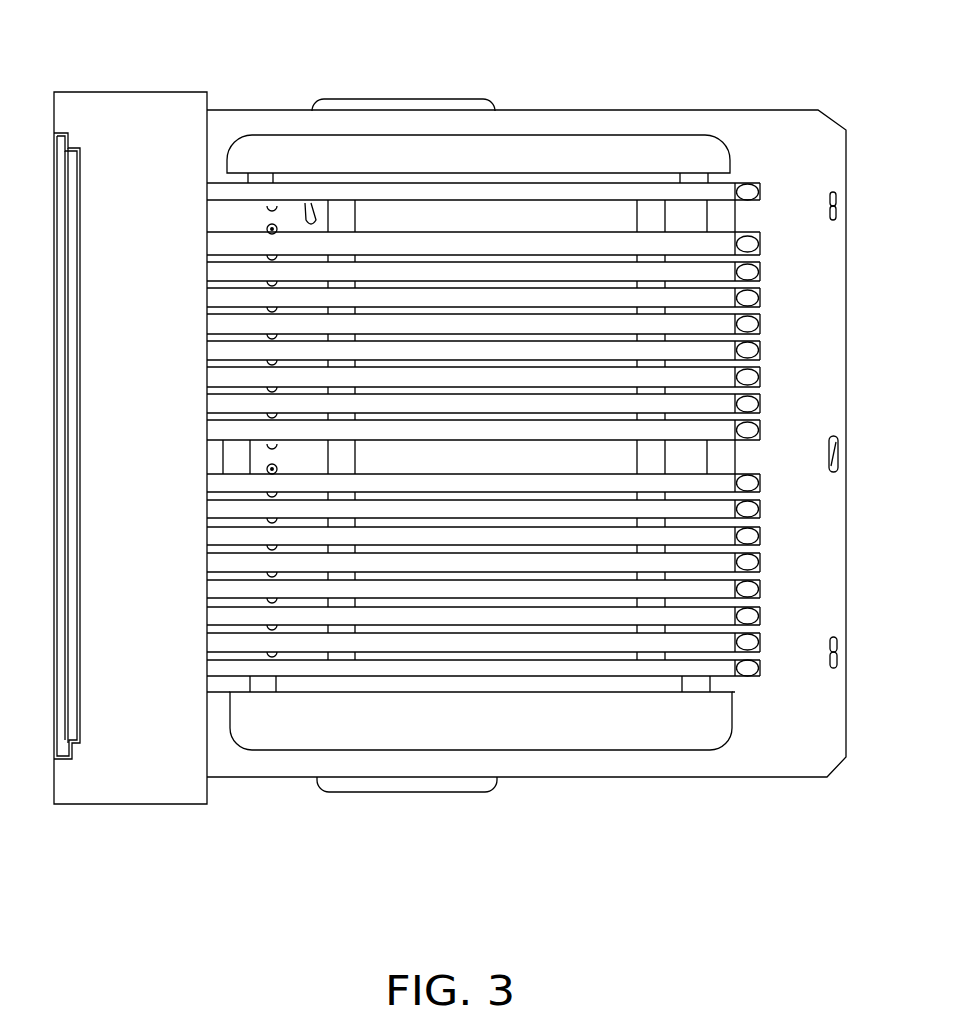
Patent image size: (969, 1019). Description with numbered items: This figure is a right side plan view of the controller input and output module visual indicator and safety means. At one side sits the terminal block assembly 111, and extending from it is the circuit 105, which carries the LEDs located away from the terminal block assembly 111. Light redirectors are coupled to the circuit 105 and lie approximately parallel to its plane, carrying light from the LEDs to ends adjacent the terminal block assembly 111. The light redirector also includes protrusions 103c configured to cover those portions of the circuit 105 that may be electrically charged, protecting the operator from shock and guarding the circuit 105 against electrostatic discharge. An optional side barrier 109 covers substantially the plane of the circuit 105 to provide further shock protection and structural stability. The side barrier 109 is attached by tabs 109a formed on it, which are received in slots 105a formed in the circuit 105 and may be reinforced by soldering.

The terminal block assembly 111 is at (104, 93).
The side barrier 109 is at (402, 100).
The protrusion 103c is at (640, 134).
The circuit 105 is at (845, 350).
The slot 105a is at (832, 196).
The tab 109a is at (830, 214).